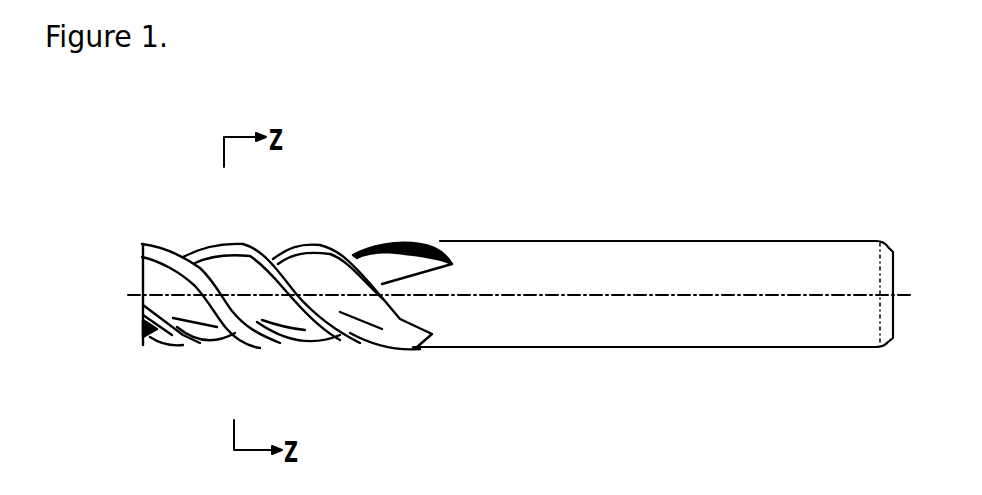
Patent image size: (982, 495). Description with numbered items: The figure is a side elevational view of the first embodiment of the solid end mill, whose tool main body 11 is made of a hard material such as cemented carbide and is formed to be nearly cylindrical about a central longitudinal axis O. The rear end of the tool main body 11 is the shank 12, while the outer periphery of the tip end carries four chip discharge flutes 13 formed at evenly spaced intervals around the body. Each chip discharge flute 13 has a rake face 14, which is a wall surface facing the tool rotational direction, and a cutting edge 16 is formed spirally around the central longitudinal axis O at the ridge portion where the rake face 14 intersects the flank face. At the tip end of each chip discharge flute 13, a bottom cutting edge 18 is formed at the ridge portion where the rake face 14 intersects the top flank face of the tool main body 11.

The tool main body 11 is at (497, 191).
The shank 12 is at (627, 253).
The chip discharge flutes 13 is at (343, 250).
The rake face 14 is at (230, 343).
The cutting edge 16 is at (237, 244).
The bottom cutting edge 18 is at (141, 257).
The central longitudinal axis O is at (527, 293).